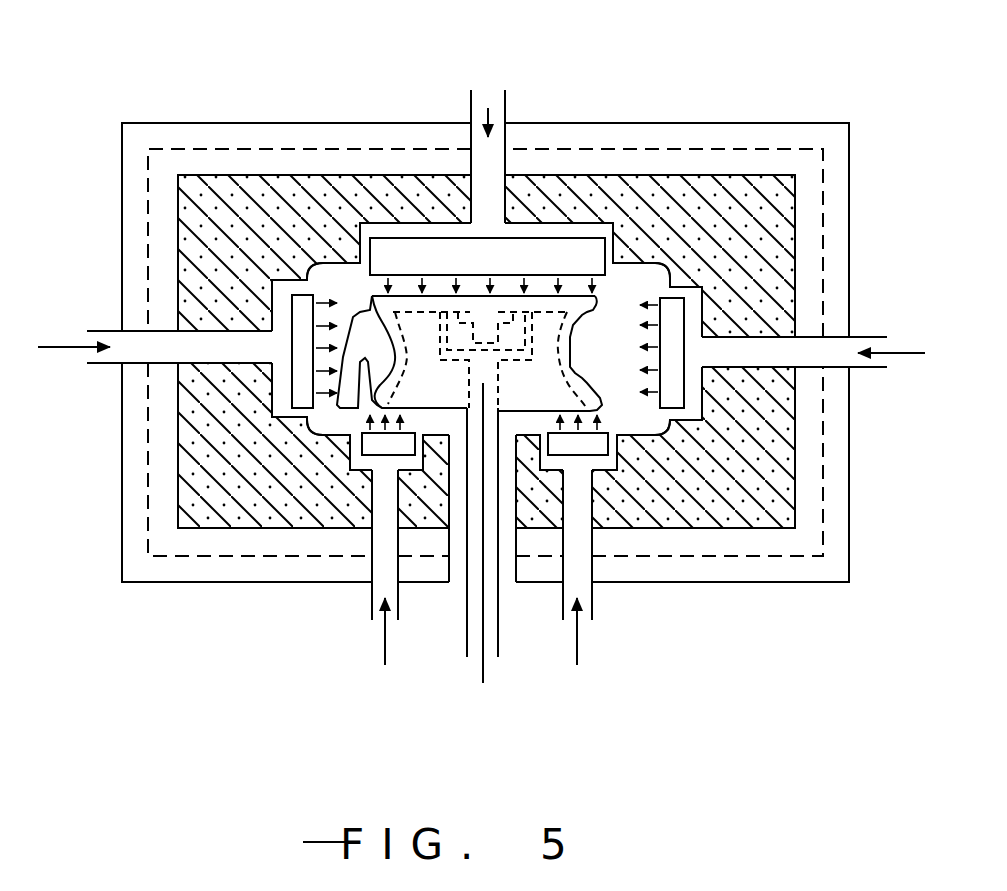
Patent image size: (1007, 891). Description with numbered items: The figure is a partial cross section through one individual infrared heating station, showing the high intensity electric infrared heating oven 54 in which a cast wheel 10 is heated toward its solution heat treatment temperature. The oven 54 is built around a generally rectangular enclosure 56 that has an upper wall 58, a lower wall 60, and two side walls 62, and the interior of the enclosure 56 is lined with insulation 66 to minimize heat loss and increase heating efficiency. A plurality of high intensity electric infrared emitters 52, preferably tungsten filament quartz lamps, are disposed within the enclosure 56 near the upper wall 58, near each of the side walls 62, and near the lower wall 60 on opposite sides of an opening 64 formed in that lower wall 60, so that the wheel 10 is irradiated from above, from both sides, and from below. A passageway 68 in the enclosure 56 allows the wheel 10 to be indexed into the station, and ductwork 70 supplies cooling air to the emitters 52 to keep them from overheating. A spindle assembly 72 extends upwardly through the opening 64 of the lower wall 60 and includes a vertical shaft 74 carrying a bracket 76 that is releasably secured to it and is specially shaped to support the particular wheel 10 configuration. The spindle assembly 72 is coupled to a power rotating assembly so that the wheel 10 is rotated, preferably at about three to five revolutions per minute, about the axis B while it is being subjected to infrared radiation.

The wheel 10 is at (598, 317).
The high intensity electric infrared emitters 52 is at (530, 262).
The high intensity electric infrared heating oven 54 is at (462, 335).
The enclosure 56 is at (325, 122).
The upper wall 58 is at (378, 135).
The lower wall 60 is at (722, 583).
The side walls 62 is at (842, 180).
The opening 64 is at (512, 576).
The insulation 66 is at (226, 230).
The passageway 68 is at (640, 432).
The ductwork 70 is at (497, 96).
The spindle assembly 72 is at (467, 641).
The vertical shaft 74 is at (499, 480).
The bracket 76 is at (509, 377).
The axis B is at (483, 595).